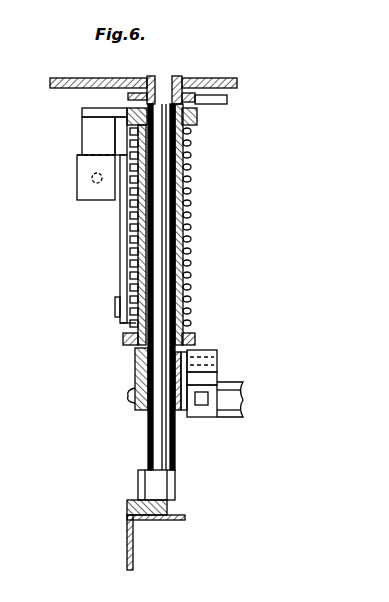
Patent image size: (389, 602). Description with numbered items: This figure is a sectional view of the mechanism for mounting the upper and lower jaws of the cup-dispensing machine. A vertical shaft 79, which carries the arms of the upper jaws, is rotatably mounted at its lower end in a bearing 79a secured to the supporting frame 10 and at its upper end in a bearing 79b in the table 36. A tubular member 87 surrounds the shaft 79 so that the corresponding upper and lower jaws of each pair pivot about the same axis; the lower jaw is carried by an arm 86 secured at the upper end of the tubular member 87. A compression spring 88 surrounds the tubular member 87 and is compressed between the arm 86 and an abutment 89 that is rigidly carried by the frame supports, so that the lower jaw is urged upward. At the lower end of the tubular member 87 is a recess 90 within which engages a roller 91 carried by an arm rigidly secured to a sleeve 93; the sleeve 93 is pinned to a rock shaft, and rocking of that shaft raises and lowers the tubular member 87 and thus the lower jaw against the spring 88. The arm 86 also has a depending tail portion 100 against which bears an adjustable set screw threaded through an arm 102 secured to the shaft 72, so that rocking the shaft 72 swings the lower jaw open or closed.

The table 36 is at (80, 78).
The bearing 79b is at (178, 77).
The arms 86 is at (100, 105).
The tail portions 100 is at (90, 150).
The tubular members 87 is at (190, 142).
The compression springs 88 is at (186, 178).
The shafts 79 is at (160, 233).
The arms 102 is at (121, 252).
The shaft 72 is at (114, 306).
The abutments 89 is at (124, 338).
The recesses 90 is at (172, 350).
The rollers 91 is at (167, 371).
The sleeve 93 is at (232, 393).
The bearing 79a is at (166, 485).
The supporting frame 10 is at (127, 538).